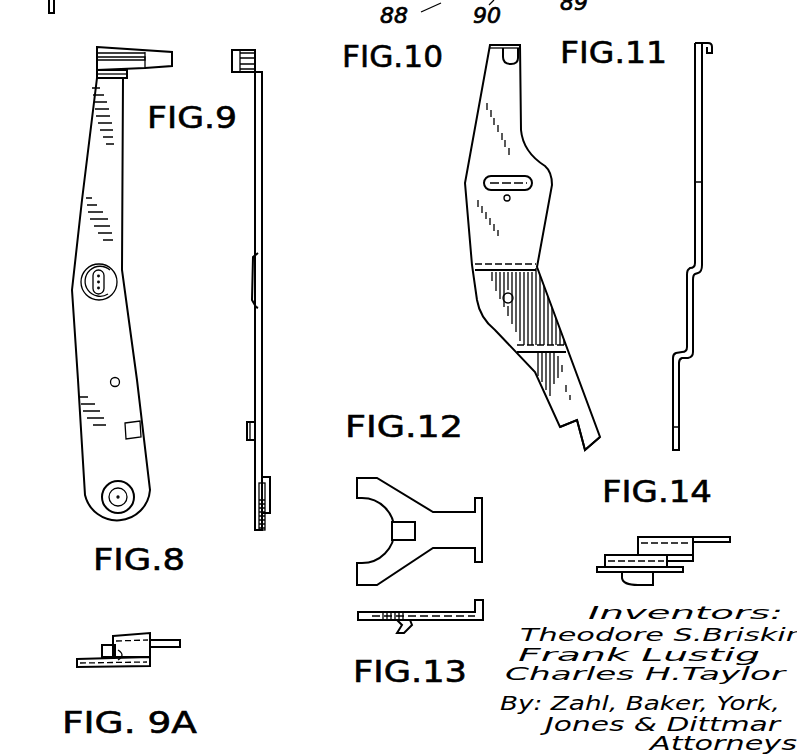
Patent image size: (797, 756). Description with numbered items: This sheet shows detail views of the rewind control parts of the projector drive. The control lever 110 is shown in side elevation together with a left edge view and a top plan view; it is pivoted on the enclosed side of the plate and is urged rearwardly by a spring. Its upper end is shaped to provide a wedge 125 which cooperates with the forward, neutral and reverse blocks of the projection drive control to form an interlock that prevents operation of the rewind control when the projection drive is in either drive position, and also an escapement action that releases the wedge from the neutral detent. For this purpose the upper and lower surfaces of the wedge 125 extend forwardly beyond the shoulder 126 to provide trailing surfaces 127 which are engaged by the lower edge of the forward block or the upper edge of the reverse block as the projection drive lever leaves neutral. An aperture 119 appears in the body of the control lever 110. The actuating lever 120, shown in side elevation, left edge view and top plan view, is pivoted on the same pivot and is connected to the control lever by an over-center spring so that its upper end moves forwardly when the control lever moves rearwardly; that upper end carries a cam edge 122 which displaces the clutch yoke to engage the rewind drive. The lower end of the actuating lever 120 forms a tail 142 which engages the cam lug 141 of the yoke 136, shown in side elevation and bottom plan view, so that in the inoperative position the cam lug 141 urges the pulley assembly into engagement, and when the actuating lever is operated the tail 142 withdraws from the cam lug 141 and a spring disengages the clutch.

In FIG. 8, the control lever 110 is at (117, 193).
In FIG. 9, the control lever 110 is at (262, 195).
In FIG. 8, the keyhole aperture 119 is at (103, 282).
In FIG. 10, the actuating lever 120 is at (477, 137).
In FIG. 11, the actuating lever 120 is at (695, 201).
In FIG. 14, the actuating lever 120 is at (693, 563).
In FIG. 10, the cam edge 122 is at (516, 62).
In FIG. 11, the cam edge 122 is at (708, 54).
In FIG. 14, the cam edge 122 is at (633, 585).
In FIG. 8, the wedge 125 is at (133, 48).
In FIG. 9A, the wedge 125 is at (118, 661).
In FIG. 8, the shoulder 126 is at (103, 60).
In FIG. 9A, the shoulder 126 is at (113, 637).
In FIG. 9, the shoulder 126 is at (234, 50).
In FIG. 8, the trailing surfaces 127 is at (100, 48).
In FIG. 9A, the trailing surfaces 127 is at (102, 648).
In FIG. 9, the trailing surfaces 127 is at (248, 48).
In FIG. 12, the yoke 136 is at (407, 507).
In FIG. 13, the yoke 136 is at (390, 611).
In FIG. 12, the cam lug 141 is at (400, 530).
In FIG. 13, the cam lug 141 is at (400, 624).
In FIG. 10, the tail 142 is at (590, 427).
In FIG. 11, the tail 142 is at (678, 440).
In FIG. 14, the tail 142 is at (713, 537).